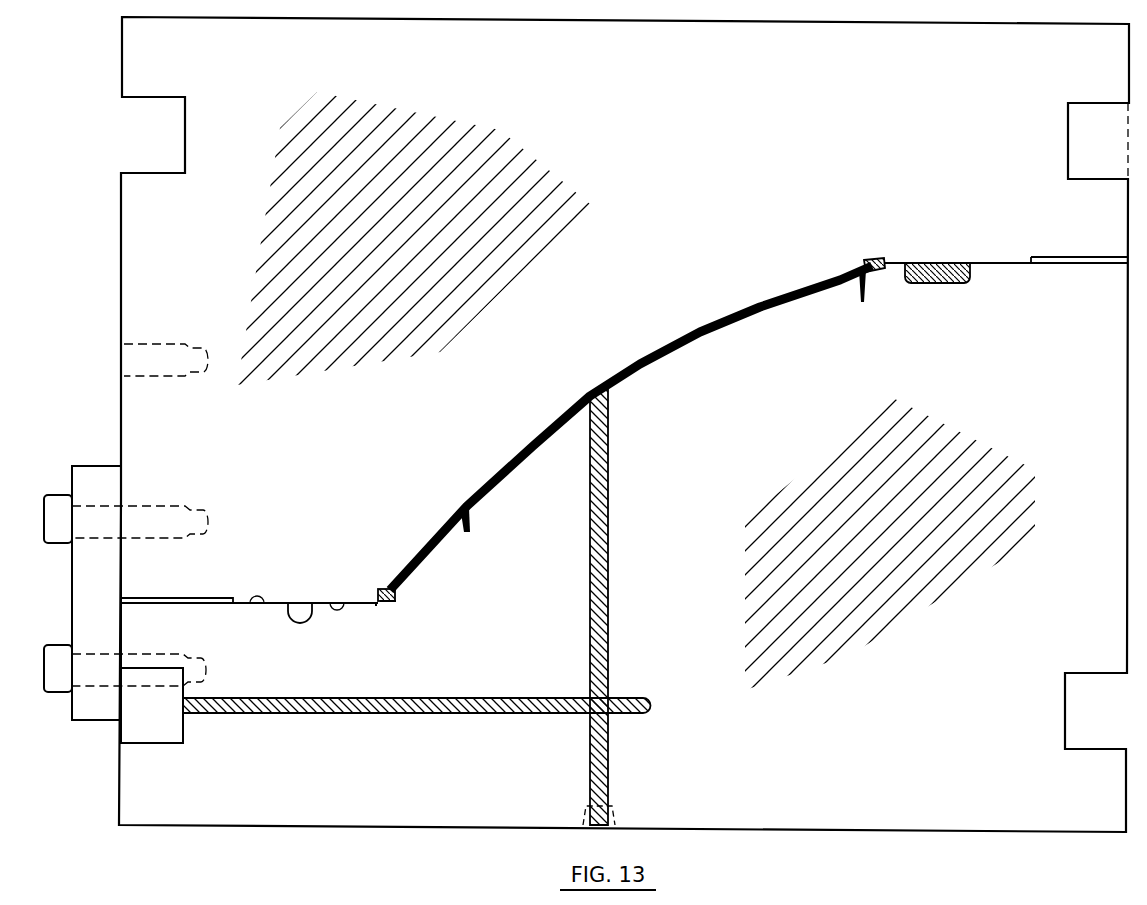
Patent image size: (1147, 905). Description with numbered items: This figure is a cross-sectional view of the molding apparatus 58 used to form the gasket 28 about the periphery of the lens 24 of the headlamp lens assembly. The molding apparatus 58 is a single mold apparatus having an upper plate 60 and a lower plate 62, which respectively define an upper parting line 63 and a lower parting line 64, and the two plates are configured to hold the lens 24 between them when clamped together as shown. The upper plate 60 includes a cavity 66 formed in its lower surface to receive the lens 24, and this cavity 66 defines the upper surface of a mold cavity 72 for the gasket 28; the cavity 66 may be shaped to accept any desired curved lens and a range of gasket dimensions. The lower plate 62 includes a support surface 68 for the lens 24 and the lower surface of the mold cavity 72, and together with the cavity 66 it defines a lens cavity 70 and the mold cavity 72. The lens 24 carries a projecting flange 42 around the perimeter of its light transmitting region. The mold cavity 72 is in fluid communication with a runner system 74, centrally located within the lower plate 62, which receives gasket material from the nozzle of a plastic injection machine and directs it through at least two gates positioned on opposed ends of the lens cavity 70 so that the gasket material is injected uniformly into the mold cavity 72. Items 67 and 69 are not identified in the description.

The molding apparatus 58 is at (76, 172).
The upper plate 60 is at (140, 262).
The lower plate 62 is at (148, 797).
The upper parting line 63 is at (264, 603).
The lower parting line 64 is at (343, 600).
The cavity 66 is at (543, 428).
The lower bracket 67 is at (384, 590).
The support surface 68 is at (800, 297).
The hinge pin 69 is at (396, 601).
The lens cavity 70 is at (714, 346).
The mold cavity 72 is at (378, 610).
The runner system 74 is at (310, 628).
The lens 24 is at (657, 346).
The gasket 28 is at (878, 262).
The flange 42 is at (865, 302).